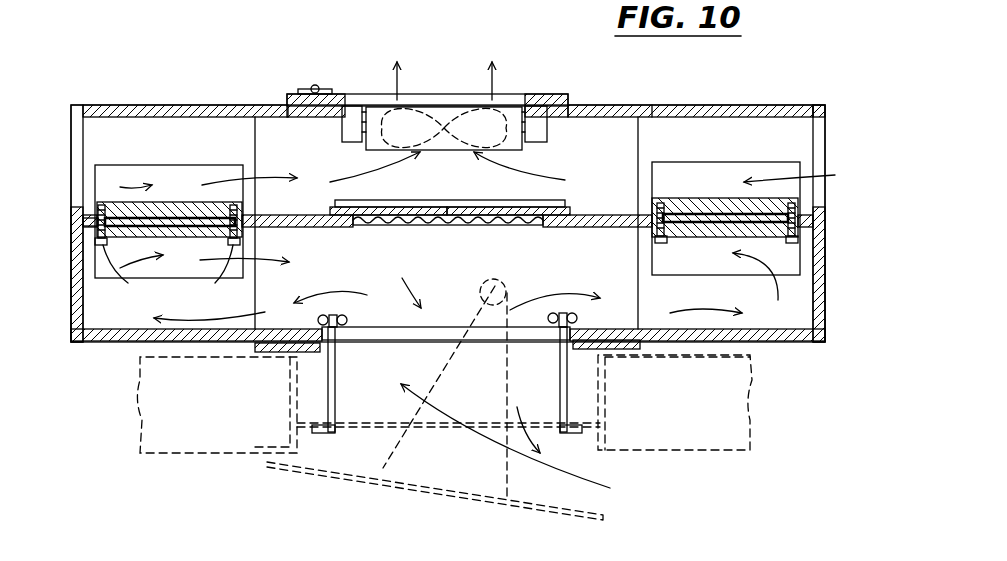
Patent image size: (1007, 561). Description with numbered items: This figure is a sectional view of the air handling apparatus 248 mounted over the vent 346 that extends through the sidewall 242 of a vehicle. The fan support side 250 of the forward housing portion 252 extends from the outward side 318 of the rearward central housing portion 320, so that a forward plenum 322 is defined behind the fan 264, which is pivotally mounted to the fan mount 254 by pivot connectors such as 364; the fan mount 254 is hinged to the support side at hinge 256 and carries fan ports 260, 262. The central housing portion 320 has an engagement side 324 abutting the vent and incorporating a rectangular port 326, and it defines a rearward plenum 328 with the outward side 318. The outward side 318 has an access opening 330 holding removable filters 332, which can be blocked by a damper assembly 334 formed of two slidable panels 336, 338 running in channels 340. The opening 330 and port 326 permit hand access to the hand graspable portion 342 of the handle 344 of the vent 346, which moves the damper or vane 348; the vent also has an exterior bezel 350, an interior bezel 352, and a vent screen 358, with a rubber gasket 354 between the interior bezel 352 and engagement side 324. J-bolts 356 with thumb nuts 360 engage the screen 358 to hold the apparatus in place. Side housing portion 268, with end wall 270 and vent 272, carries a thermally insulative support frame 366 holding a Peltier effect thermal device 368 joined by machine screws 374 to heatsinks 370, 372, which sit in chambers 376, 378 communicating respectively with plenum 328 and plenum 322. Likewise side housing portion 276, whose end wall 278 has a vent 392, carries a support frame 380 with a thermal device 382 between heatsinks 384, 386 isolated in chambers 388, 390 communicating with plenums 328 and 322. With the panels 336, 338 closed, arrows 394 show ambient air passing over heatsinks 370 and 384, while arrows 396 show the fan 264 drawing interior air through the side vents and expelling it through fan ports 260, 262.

The sidewall 242 is at (185, 469).
The air handling apparatus 248 is at (817, 72).
The fan support side 250 is at (619, 104).
The forward housing portion 252 is at (272, 90).
The fan mount 254 is at (548, 94).
The hinge 256 is at (309, 88).
The fan port 260 is at (366, 93).
The fan port 262 is at (355, 117).
The electric motor driven fan 264 is at (417, 107).
The side housing portion 268 is at (100, 84).
The end wall 270 is at (80, 271).
The vent 272 is at (125, 165).
The side housing portion 276 is at (800, 78).
The end wall 278 is at (823, 292).
The outward side 318 is at (622, 210).
The rearward central housing portion 320 is at (283, 359).
The forward plenum 322 is at (622, 137).
The engagement side 324 is at (627, 350).
The rectangular port 326 is at (340, 340).
The rearward plenum 328 is at (464, 283).
The access opening 330 is at (537, 226).
The removable filter 332 is at (437, 226).
The damper assembly 334 is at (598, 185).
The slidable panel 336 is at (388, 207).
The slidable panel 338 is at (510, 207).
The channel 340 is at (335, 201).
The hand graspable portion 342 is at (507, 286).
The handle 344 is at (553, 465).
The vent 346 is at (684, 498).
The damper or vane 348 is at (440, 493).
The exterior bezel 350 is at (643, 457).
The interior bezel 352 is at (620, 363).
The rubber gasket 354 is at (257, 353).
The J-bolt 356 is at (336, 403).
The vent screen 358 is at (413, 430).
The thumb nut 360 is at (322, 318).
The pivot connector 364 is at (541, 105).
The thermally insulative support frame 366 is at (95, 225).
The Peltier effect thermal device 368 is at (176, 210).
The heatsink 370 is at (107, 262).
The heatsink 372 is at (106, 172).
The machine screw 374 is at (228, 270).
The chamber 376 is at (110, 320).
The chamber 378 is at (112, 133).
The thermally insulative support frame 380 is at (797, 222).
The Peltier effect thermal device 382 is at (718, 213).
The heatsink 384 is at (790, 253).
The heatsink 386 is at (714, 178).
The chamber 388 is at (797, 307).
The chamber 390 is at (797, 137).
The vent 392 is at (820, 150).
The air flow arrows 394 is at (265, 312).
The air flow arrows 396 is at (120, 187).